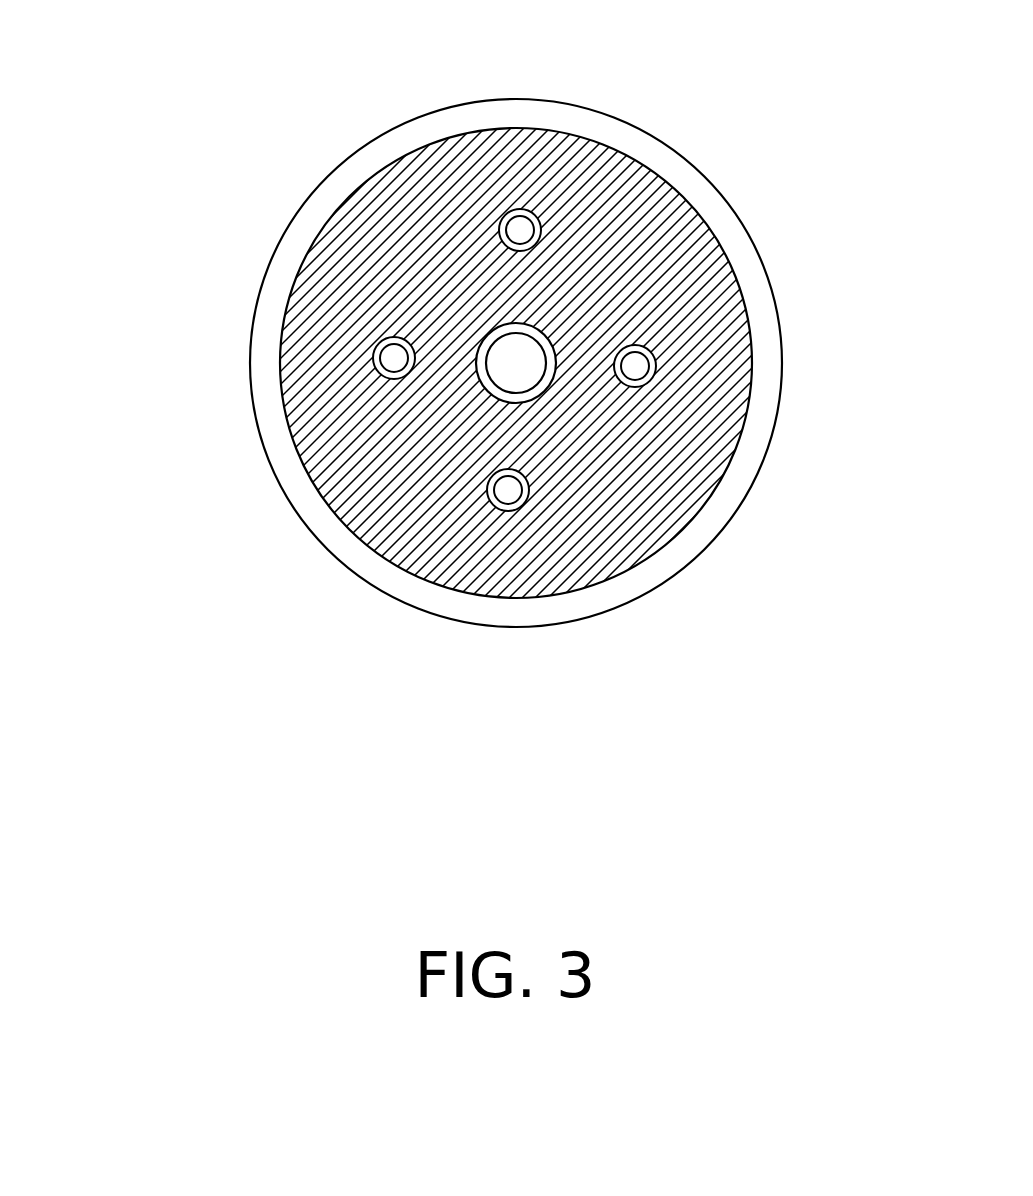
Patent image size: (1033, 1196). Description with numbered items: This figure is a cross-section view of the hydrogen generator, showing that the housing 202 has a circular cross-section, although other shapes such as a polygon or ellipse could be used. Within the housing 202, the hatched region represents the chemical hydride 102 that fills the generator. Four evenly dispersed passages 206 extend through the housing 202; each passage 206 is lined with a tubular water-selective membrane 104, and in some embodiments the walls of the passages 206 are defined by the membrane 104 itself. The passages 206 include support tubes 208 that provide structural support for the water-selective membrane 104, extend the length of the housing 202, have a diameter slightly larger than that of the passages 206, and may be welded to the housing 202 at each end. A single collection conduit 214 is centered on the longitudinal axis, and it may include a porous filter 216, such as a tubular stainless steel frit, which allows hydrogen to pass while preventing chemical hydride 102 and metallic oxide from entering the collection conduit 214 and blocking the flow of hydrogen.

The chemical hydride 102 is at (712, 334).
The water-selective membrane 104 is at (520, 212).
The housing 202 is at (728, 232).
The passages 206 is at (640, 352).
The support tubes 208 is at (502, 218).
The collection conduit 214 is at (540, 329).
The filter 216 is at (488, 395).